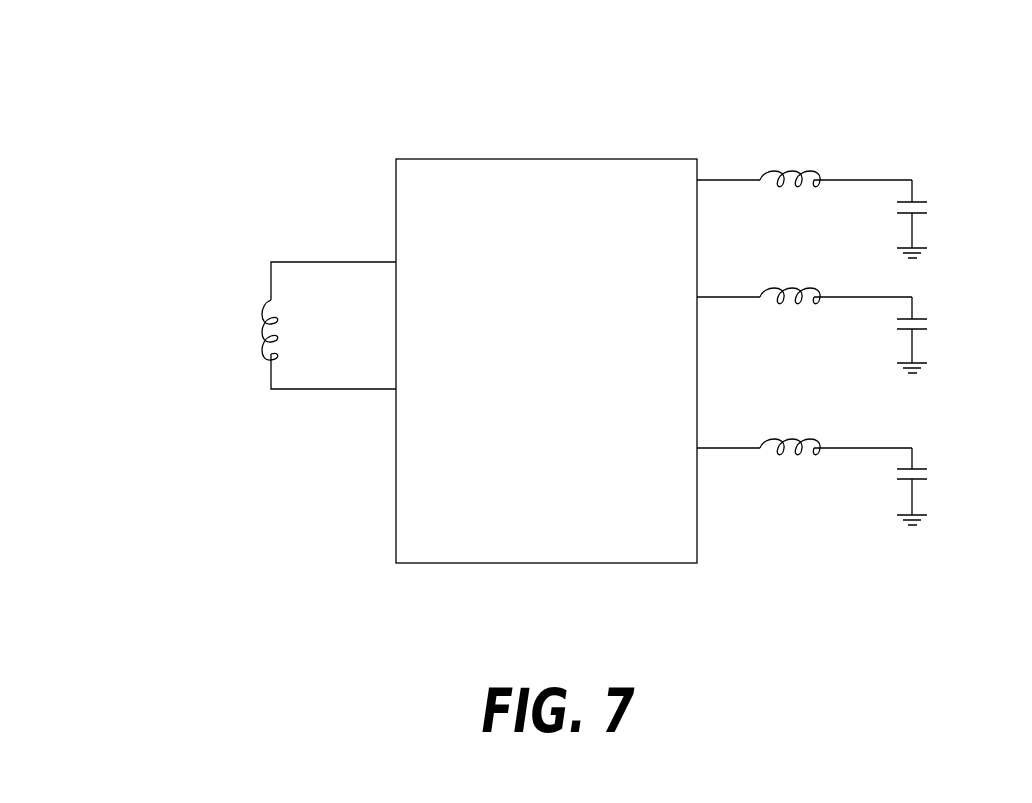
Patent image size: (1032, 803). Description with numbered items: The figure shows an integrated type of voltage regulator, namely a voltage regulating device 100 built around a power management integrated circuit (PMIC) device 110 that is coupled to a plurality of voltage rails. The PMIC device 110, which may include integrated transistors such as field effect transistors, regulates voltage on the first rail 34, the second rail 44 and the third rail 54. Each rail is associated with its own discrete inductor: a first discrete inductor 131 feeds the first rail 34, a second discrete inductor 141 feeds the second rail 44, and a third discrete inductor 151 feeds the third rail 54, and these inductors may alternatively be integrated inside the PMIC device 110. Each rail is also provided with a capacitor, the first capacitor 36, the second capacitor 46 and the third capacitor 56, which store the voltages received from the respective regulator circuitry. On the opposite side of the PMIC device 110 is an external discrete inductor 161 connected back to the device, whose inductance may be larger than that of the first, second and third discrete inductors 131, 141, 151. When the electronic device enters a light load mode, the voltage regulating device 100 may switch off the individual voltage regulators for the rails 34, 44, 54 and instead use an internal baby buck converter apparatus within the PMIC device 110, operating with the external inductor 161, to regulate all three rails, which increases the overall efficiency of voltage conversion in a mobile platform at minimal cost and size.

The voltage regulating device 100 is at (290, 107).
The power management integrated circuit (PMIC) device 110 is at (531, 374).
The external discrete inductor 161 is at (250, 318).
The first discrete inductor 131 is at (789, 192).
The first rail 34 is at (865, 178).
The first capacitor 36 is at (934, 205).
The second discrete inductor 141 is at (793, 309).
The second rail 44 is at (865, 295).
The second capacitor 46 is at (934, 322).
The third discrete inductor 151 is at (794, 461).
The third rail 54 is at (865, 446).
The third capacitor 56 is at (934, 474).